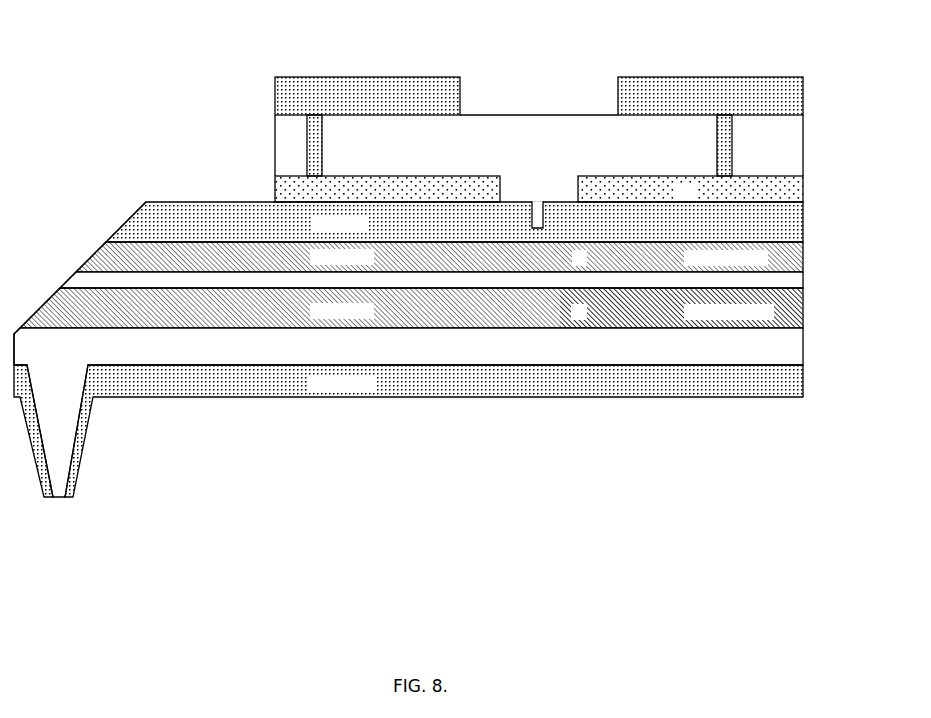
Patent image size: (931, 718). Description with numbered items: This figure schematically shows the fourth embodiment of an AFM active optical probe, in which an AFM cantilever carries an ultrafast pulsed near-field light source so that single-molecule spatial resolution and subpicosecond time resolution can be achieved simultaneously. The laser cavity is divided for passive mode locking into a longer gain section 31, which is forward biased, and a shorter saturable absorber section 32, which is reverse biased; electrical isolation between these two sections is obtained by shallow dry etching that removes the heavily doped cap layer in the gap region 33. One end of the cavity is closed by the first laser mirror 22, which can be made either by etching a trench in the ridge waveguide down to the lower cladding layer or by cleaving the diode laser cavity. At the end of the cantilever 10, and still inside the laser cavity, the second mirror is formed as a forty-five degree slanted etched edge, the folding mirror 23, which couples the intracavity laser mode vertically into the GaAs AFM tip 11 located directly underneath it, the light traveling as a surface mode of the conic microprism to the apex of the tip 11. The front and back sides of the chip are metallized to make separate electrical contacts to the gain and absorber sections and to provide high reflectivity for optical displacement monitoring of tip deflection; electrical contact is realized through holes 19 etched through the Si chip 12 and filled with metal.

The cantilever 10 is at (434, 288).
The tip 11 is at (65, 437).
The Si chip 12 is at (578, 134).
The holes 19 is at (307, 148).
The first laser mirror 22 is at (803, 273).
The folding mirror 23 is at (62, 273).
The gain section 31 is at (267, 302).
The saturable absorber section 32 is at (632, 303).
The gap region 33 is at (537, 201).